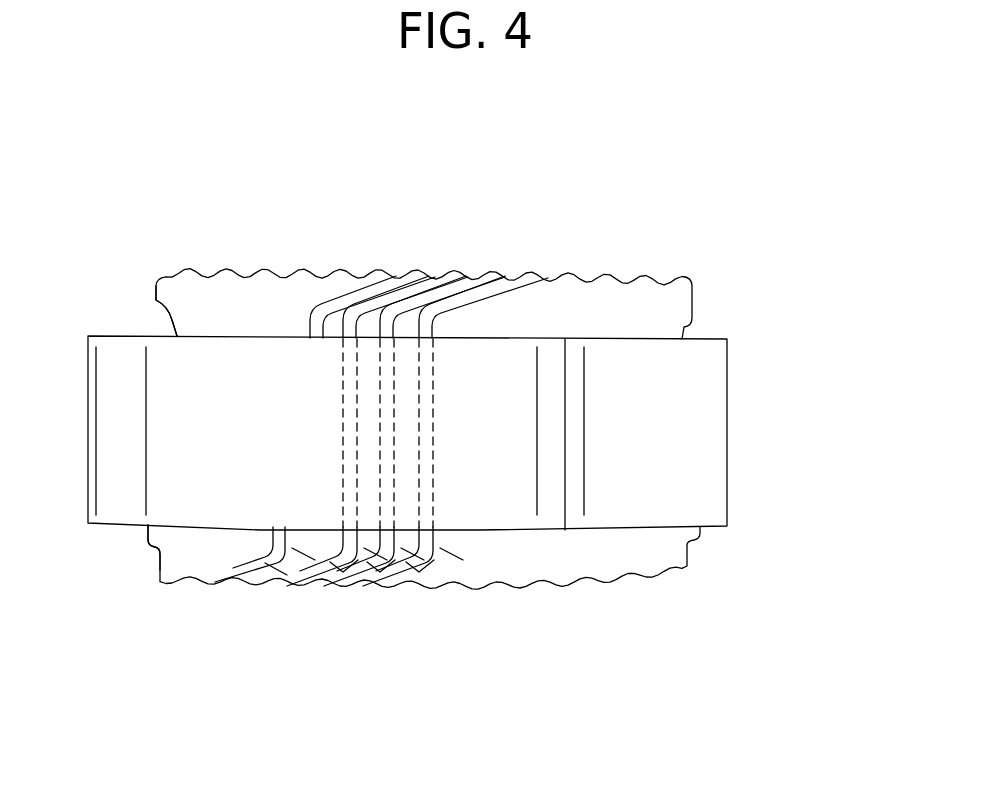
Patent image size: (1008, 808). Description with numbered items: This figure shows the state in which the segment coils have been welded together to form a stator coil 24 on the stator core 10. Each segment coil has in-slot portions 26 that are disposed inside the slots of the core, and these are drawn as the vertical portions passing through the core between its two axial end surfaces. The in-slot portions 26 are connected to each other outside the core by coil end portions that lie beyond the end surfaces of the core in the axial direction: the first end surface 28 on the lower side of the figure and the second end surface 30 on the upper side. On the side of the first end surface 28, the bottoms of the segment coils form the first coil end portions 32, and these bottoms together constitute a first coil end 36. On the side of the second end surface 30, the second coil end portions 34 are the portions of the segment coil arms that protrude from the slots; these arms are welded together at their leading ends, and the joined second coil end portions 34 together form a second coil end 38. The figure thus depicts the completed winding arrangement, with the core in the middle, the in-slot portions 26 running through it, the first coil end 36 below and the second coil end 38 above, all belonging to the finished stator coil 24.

The component body 10 is at (698, 427).
The stator coil 24 is at (462, 435).
The in-slot portions 26 is at (385, 380).
The first end surface 28 is at (182, 530).
The second end surface 30 is at (198, 334).
The first coil end portions 32 is at (281, 578).
The second coil end portions 34 is at (366, 297).
The first coil end 36 is at (632, 593).
The second coil end 38 is at (220, 265).